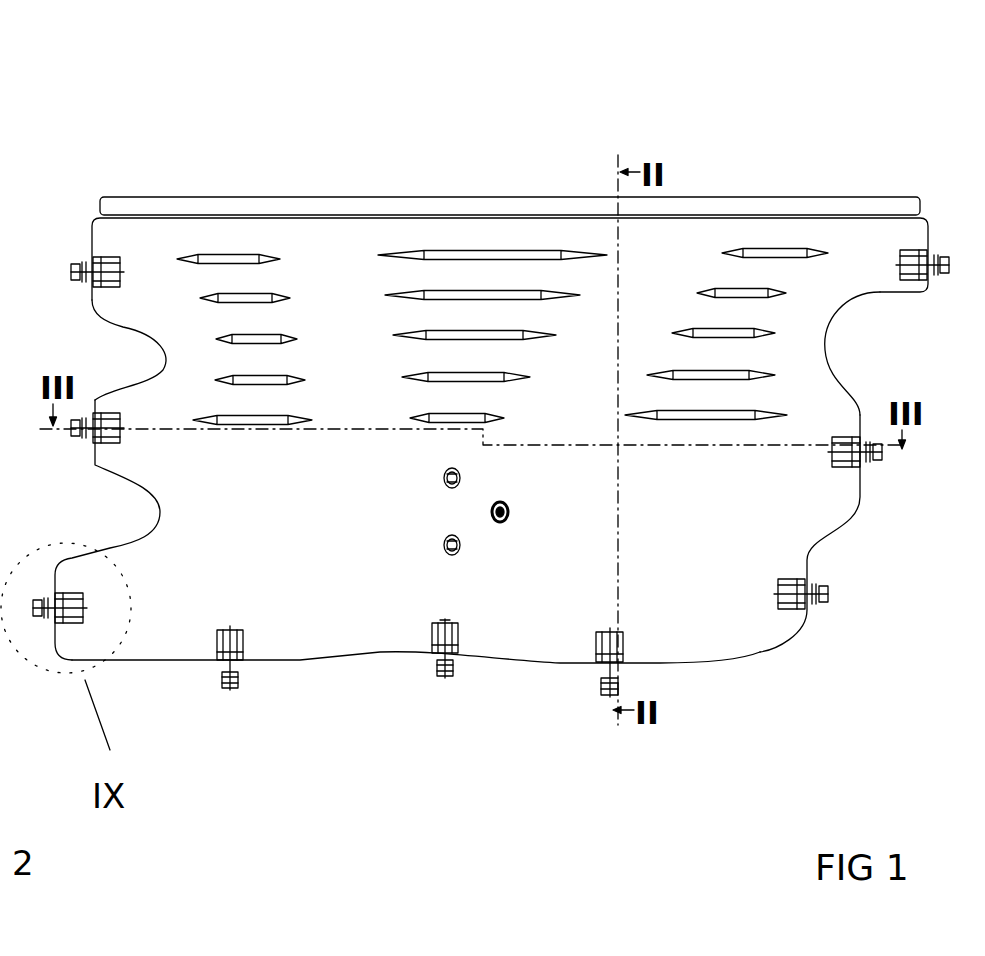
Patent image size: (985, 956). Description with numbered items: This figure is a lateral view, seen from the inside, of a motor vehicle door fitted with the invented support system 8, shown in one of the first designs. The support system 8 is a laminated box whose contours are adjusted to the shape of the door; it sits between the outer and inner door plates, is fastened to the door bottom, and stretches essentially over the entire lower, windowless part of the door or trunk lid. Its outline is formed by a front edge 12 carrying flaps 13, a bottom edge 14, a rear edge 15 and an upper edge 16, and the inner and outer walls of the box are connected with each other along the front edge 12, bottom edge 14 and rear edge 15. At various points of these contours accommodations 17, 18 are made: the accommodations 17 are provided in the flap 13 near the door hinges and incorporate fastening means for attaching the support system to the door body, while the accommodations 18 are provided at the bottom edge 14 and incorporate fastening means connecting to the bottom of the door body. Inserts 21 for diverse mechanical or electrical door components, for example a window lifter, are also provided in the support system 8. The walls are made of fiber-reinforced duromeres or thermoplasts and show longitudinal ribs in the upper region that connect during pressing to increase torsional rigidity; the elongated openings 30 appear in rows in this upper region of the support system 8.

The support system 8 is at (527, 152).
The front edge 12 is at (126, 548).
The flap 13 is at (100, 607).
The bottom edge 14 is at (367, 655).
The rear edge 15 is at (878, 287).
The upper edge 16 is at (727, 202).
The accommodation 17 is at (112, 418).
The accommodation 18 is at (455, 640).
The insert 21 is at (500, 512).
The slot 30 is at (270, 422).